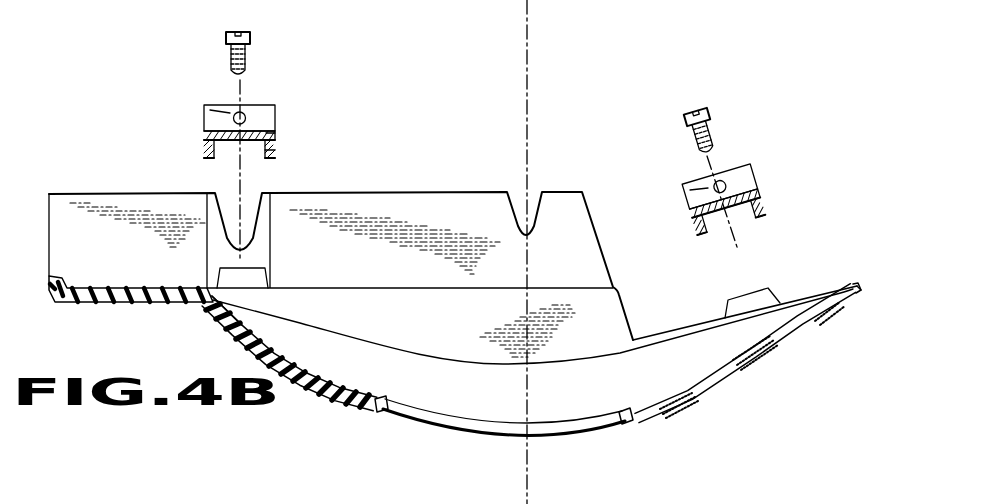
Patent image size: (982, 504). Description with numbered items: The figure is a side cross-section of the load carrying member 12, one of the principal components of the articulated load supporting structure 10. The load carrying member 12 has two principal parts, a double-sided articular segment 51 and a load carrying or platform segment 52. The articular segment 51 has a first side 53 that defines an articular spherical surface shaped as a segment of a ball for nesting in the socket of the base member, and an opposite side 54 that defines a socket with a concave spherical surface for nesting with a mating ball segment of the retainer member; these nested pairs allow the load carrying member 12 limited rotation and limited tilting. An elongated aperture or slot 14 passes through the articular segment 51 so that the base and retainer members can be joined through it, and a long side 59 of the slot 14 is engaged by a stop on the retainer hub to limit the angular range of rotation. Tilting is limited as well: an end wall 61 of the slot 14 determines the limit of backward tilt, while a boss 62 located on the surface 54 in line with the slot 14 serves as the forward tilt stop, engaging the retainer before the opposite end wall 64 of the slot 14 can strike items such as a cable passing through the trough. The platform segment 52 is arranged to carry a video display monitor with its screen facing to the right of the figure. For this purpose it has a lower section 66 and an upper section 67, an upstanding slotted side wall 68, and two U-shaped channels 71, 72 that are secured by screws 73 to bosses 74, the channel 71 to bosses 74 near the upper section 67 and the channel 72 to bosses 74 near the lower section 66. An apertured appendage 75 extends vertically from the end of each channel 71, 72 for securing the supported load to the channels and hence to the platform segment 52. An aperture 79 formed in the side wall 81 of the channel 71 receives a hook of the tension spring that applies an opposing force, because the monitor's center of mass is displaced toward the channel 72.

The articulated load supporting structure 10 is at (822, 262).
The load carrying member 12 is at (860, 285).
The elongated aperture or slot 14 is at (562, 422).
The double-sided articular segment 51 is at (350, 418).
The load carrying segment 52 is at (372, 185).
The first side 53 is at (688, 405).
The other side 54 is at (345, 340).
The long side of the elongated slot 59 is at (465, 424).
The end wall 61 is at (384, 400).
The boss 62 is at (762, 358).
The end wall 64 is at (628, 410).
The lower section 66 is at (660, 333).
The upper section 67 is at (113, 292).
The upstanding slotted side wall 68 is at (452, 198).
The U-shaped channel 71 is at (276, 116).
The U-shaped channel 72 is at (752, 181).
The screws 73 is at (245, 34).
The bosses 74 is at (268, 278).
The apertured appendage 75 is at (215, 115).
The aperture 79 is at (281, 143).
The side wall 81 is at (277, 150).